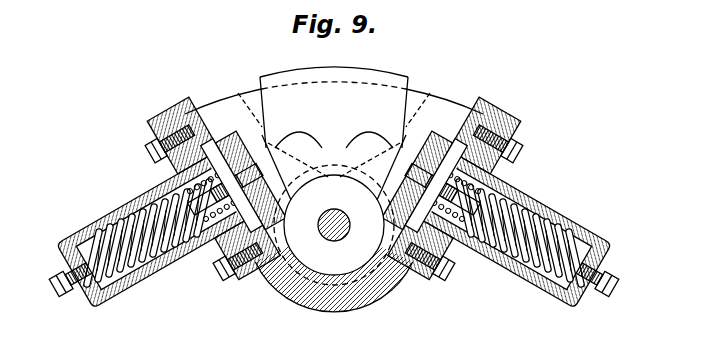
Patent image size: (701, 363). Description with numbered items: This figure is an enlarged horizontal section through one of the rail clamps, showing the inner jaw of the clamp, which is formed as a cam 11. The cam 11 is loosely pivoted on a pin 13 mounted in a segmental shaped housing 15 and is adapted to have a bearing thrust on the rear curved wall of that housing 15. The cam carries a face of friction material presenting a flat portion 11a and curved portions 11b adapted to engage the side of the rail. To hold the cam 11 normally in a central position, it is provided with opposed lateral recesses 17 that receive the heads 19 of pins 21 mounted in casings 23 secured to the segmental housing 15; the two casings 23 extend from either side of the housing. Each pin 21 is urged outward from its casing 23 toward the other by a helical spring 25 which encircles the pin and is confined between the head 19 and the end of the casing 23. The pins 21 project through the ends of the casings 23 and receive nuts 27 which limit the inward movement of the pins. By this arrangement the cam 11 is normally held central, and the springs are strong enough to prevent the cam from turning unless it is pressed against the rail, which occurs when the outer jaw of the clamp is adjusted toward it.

The cam 11 is at (393, 82).
The flat portion 11a is at (340, 70).
The curved portions 11b is at (273, 77).
The pin 13 is at (333, 211).
The segmental shaped housing 15 is at (337, 300).
The lateral recesses 17 is at (247, 112).
The heads 19 is at (240, 143).
The pins 21 is at (123, 213).
The casings 23 is at (75, 232).
The helical springs 25 is at (182, 196).
The nuts 27 is at (53, 268).